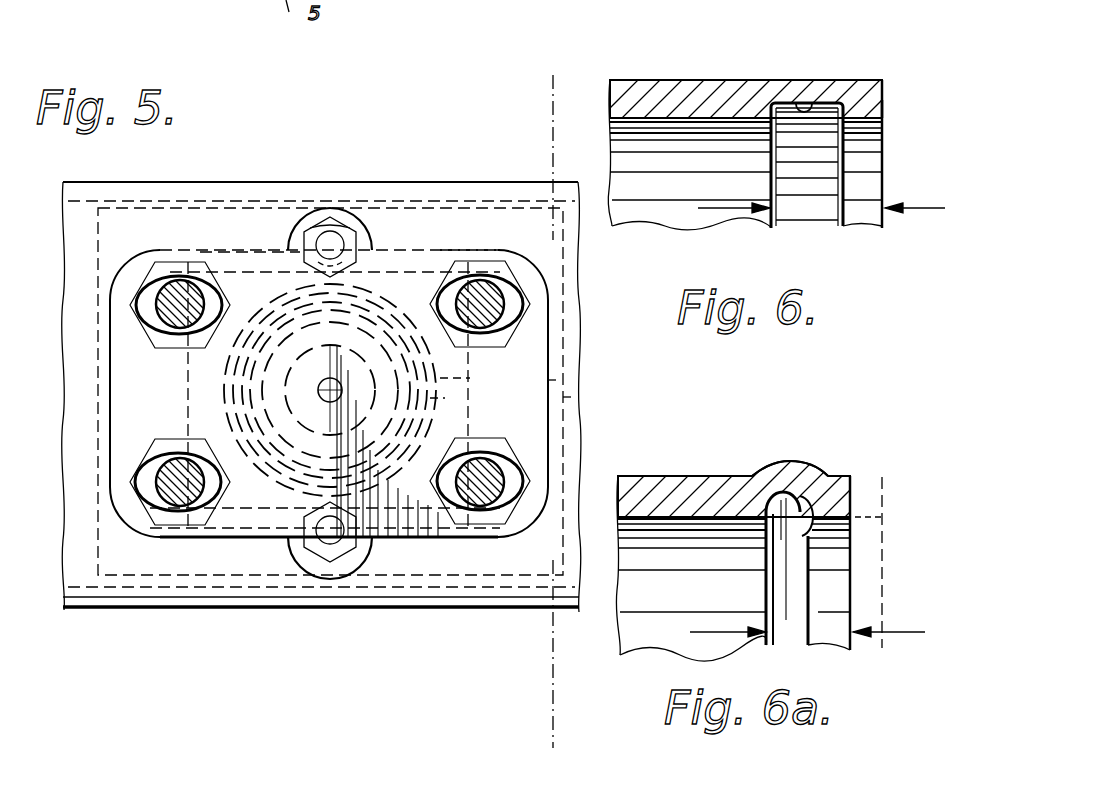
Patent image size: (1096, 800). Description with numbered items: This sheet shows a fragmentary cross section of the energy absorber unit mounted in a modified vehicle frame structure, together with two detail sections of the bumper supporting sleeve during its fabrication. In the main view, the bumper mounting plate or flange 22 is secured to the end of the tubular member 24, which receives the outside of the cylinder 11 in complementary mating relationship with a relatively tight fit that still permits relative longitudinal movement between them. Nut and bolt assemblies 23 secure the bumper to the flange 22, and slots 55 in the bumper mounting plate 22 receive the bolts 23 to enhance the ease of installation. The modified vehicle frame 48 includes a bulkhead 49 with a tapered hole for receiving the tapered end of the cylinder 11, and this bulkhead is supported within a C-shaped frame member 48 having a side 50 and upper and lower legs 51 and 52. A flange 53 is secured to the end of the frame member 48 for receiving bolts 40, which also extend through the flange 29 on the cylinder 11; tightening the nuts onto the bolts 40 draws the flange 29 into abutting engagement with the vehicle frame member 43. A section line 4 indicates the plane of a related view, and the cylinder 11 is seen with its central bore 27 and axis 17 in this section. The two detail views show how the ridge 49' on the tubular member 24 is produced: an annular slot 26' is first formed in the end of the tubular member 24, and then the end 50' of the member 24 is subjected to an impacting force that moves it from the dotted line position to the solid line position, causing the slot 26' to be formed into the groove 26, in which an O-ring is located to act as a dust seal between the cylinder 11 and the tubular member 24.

In FIG. 5, the section line 4- 4 is at (572, 99).
In FIG. 5, the cylinder 11 is at (445, 398).
In FIG. 5, the shaft 17 is at (317, 388).
In FIG. 5, the flange 22 is at (98, 272).
In FIG. 5, the nut and bolt assemblies 23 is at (178, 278).
In FIG. 5, the tubular member 24 is at (440, 378).
In FIG. 6, the tubular member 24 is at (708, 80).
In FIG. 6A, the tubular member 24 is at (694, 477).
In FIG. 6A, the groove 26 is at (845, 568).
In FIG. 6, the annular slot 26' is at (799, 124).
In FIG. 5, the bore 27 is at (235, 400).
In FIG. 5, the flange 29 is at (354, 238).
In FIG. 5, the bolts 40 is at (350, 236).
In FIG. 5, the vehicle frame member 43 is at (320, 182).
In FIG. 5, the vehicle frame 48 is at (245, 254).
In FIG. 5, the bulkhead 49 is at (591, 370).
In FIG. 6A, the ridge 49' is at (790, 439).
In FIG. 5, the side 50 is at (284, 393).
In FIG. 6, the end 50' is at (903, 81).
In FIG. 6A, the end 50' is at (884, 531).
In FIG. 5, the upper leg 51 is at (450, 250).
In FIG. 5, the lower leg 52 is at (438, 540).
In FIG. 5, the flange 53 is at (575, 397).
In FIG. 5, the slots 55 is at (158, 337).